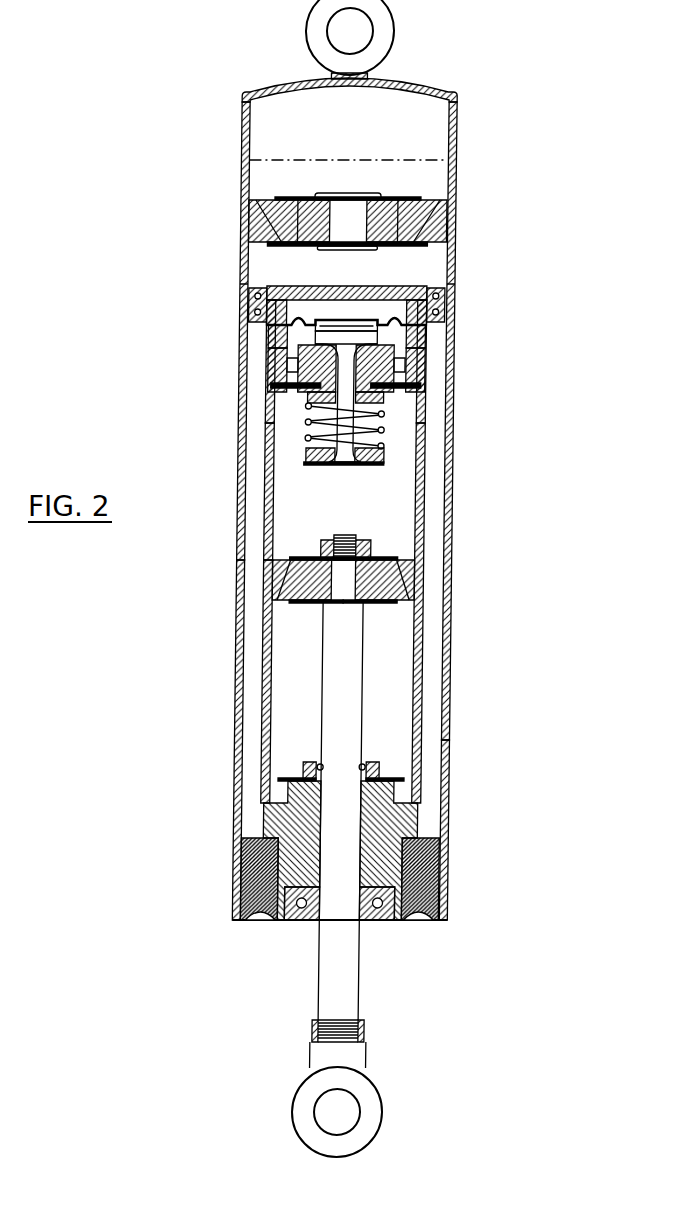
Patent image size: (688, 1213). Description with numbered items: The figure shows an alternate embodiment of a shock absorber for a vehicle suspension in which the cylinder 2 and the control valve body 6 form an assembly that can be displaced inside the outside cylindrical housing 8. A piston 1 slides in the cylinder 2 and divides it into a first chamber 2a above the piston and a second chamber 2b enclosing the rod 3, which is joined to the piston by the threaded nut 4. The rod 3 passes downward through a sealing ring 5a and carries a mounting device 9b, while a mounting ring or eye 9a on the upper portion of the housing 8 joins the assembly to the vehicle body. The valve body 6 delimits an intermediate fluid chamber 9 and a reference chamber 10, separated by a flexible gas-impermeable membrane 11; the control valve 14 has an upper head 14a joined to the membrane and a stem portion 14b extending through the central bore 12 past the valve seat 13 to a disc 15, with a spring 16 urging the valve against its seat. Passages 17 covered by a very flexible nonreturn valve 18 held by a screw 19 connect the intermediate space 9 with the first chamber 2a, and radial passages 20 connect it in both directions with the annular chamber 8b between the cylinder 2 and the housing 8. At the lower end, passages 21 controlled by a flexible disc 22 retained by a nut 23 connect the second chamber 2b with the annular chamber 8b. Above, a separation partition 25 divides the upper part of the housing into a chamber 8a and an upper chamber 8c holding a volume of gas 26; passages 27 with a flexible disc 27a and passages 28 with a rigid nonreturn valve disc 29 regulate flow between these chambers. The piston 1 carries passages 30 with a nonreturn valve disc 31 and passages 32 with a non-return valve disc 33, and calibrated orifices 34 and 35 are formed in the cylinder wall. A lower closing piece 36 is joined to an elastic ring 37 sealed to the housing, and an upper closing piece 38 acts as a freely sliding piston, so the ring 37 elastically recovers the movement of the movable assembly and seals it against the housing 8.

The piston 1 is at (390, 581).
The cylinder 2 is at (432, 492).
The first chamber 2a is at (385, 517).
The second chamber 2b is at (393, 680).
The piston rod 3 is at (348, 680).
The threaded nut 4 is at (329, 546).
The sealing ring 5a is at (312, 920).
The control valve body 6 is at (412, 373).
The outside cylindrical housing 8 is at (247, 690).
The chamber 8a is at (412, 262).
The annular chamber 8b is at (265, 563).
The upper chamber 8c is at (410, 120).
The intermediate fluid chamber 9 is at (427, 320).
The mounting ring 9a is at (395, 27).
The mounting device 9b is at (381, 1108).
The reference chamber 10 is at (272, 322).
The flexible gas-impermeable membrane 11 is at (395, 326).
The central bore 12 is at (362, 386).
The valve seat 13 is at (282, 345).
The control valve 14 is at (347, 326).
The upper head 14a is at (333, 326).
The stem portion 14b is at (350, 462).
The disc 15 is at (305, 460).
The spring 16 is at (378, 450).
The passages 17 is at (287, 386).
The nonreturn valve 18 is at (304, 397).
The screw 19 is at (305, 412).
The radial passages 20 is at (423, 350).
The passages 21 is at (288, 812).
The flexible disc 22 is at (316, 776).
The nut 23 is at (383, 775).
The separation partition 25 is at (311, 197).
The gas 26 is at (283, 123).
The passages 27 is at (262, 208).
The flexible disc 27a is at (275, 246).
The passages 28 is at (420, 212).
The rigid nonreturn valve disc 29 is at (394, 193).
The passages 30 is at (278, 592).
The nonreturn valve disc 31 is at (298, 559).
The passages 32 is at (421, 571).
The non-return valve disc 33 is at (393, 601).
The calibrated orifice 34 is at (425, 423).
The calibrated orifice 35 is at (423, 745).
The lower closing piece 36 is at (395, 836).
The elastic ring 37 is at (272, 878).
The upper closing piece 38 is at (255, 296).